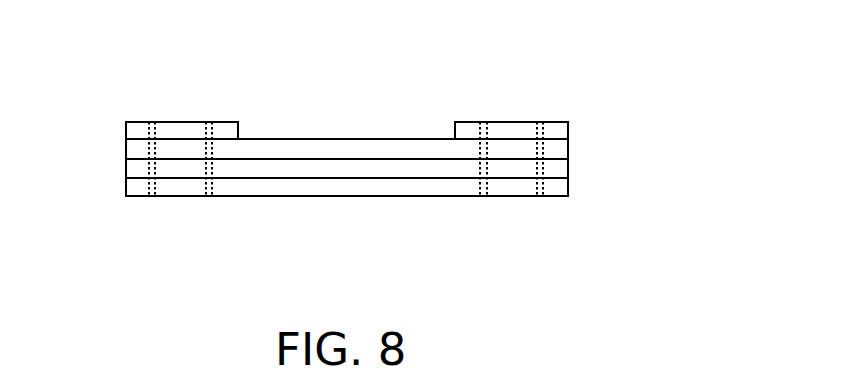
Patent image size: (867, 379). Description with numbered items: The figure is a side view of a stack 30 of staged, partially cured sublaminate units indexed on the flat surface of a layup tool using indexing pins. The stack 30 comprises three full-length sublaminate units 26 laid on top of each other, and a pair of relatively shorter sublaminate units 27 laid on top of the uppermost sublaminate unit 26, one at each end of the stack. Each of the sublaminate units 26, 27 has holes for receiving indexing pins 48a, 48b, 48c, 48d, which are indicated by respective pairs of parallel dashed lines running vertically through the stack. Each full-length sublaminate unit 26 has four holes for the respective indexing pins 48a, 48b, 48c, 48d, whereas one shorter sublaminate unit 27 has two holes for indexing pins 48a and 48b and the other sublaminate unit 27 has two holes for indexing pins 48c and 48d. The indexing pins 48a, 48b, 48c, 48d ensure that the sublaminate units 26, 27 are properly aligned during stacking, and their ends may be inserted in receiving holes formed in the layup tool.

The stack 30 is at (406, 92).
The sublaminate unit 27 is at (182, 122).
The sublaminate unit 26 is at (125, 169).
The indexing pin 48a is at (153, 197).
The indexing pin 48b is at (208, 197).
The indexing pin 48c is at (482, 197).
The indexing pin 48d is at (540, 197).